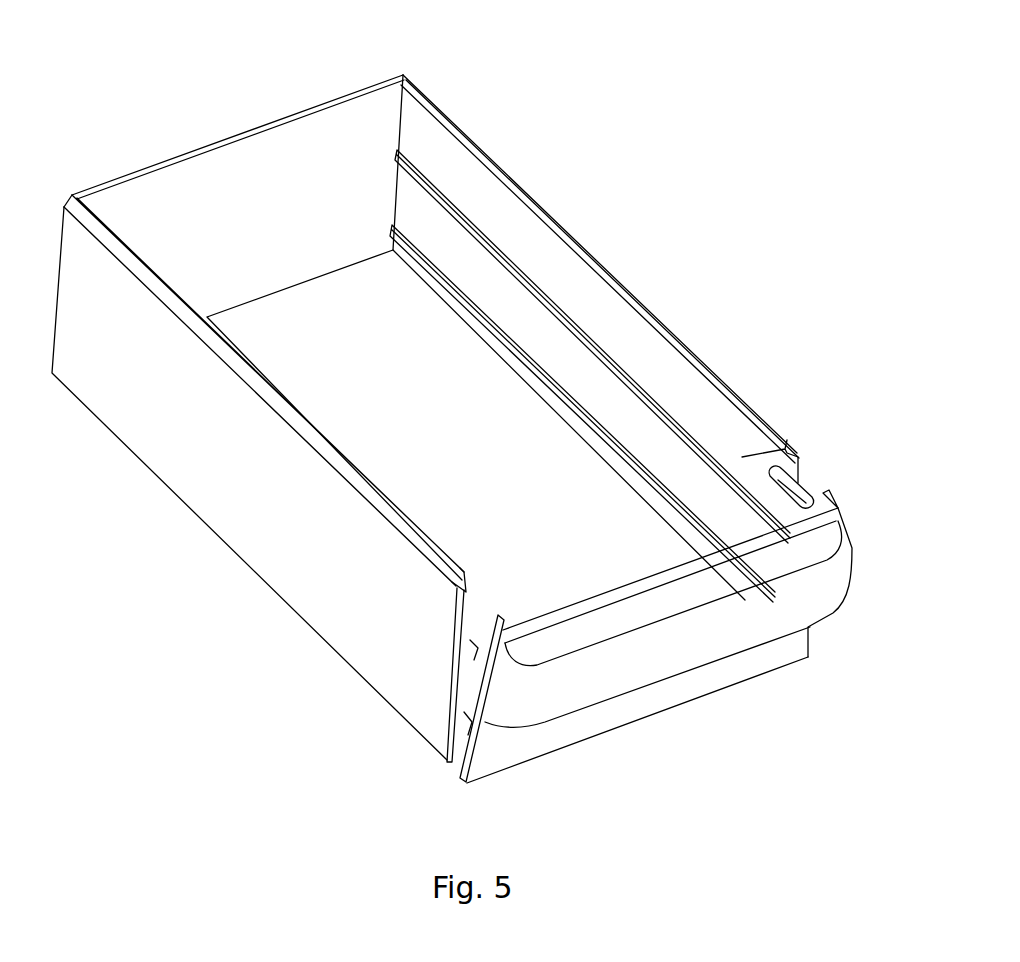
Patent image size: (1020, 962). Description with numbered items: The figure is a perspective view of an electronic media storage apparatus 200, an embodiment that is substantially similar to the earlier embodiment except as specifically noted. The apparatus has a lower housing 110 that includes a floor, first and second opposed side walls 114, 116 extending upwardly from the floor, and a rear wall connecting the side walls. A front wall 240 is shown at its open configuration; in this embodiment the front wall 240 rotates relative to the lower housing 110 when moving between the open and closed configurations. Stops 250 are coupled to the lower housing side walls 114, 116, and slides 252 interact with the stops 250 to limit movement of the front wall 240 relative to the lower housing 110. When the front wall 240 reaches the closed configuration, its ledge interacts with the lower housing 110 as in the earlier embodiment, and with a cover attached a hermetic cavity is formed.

The electronic media storage apparatus 200 is at (611, 85).
The lower housing 110 is at (142, 525).
The first side wall 114 is at (266, 567).
The second side wall 116 is at (589, 218).
The front wall 240 is at (634, 745).
The stop 250 is at (742, 457).
The slide 252 is at (807, 487).